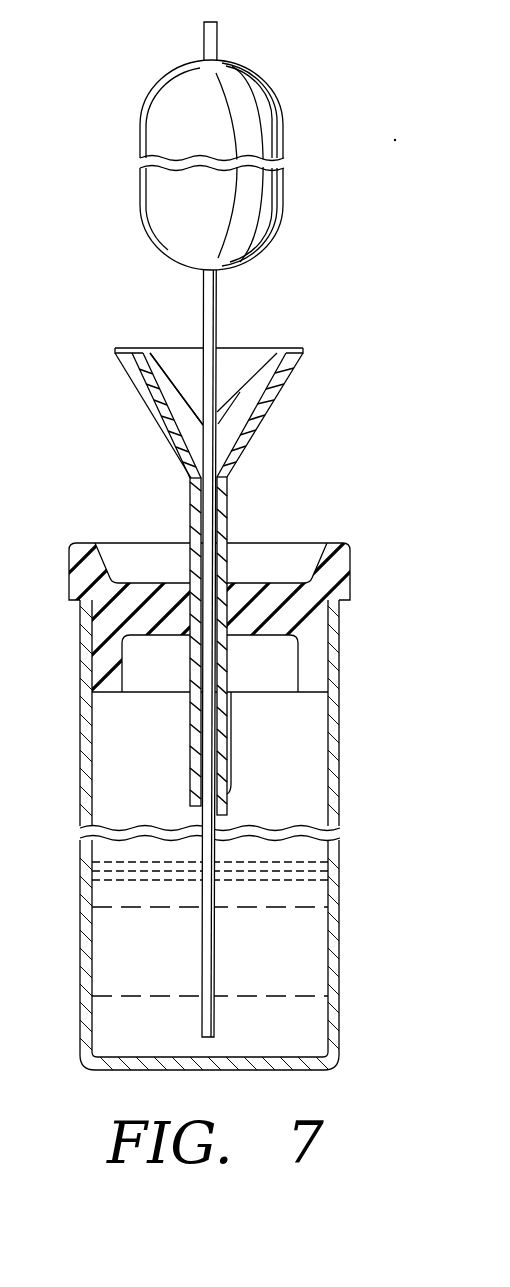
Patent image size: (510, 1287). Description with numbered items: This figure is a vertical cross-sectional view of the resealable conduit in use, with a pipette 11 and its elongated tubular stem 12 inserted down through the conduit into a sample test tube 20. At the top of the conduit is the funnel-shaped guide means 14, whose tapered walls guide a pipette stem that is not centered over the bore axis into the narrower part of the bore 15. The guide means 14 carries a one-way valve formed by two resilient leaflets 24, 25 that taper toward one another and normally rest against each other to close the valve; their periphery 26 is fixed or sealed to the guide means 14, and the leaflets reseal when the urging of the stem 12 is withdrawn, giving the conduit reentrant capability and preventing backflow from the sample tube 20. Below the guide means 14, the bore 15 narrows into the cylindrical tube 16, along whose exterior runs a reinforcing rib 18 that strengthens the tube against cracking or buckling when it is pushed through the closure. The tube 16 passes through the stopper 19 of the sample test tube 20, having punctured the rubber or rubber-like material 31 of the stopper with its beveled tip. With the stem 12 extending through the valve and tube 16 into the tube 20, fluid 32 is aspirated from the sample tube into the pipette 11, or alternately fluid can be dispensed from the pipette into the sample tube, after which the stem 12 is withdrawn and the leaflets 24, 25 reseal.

The pipette 11 is at (138, 86).
The stem 12 is at (205, 308).
The guide means 14 is at (145, 403).
The bore 15 is at (177, 423).
The cylindrical tube 16 is at (192, 522).
The reinforcing rib 18 is at (232, 517).
The stopper 19 is at (365, 551).
The sample test tube 20 is at (347, 761).
The leaflet 24 is at (155, 362).
The leaflet 25 is at (263, 363).
The periphery 26 is at (128, 345).
The rubber-like material 31 is at (352, 578).
The fluid 32 is at (318, 940).